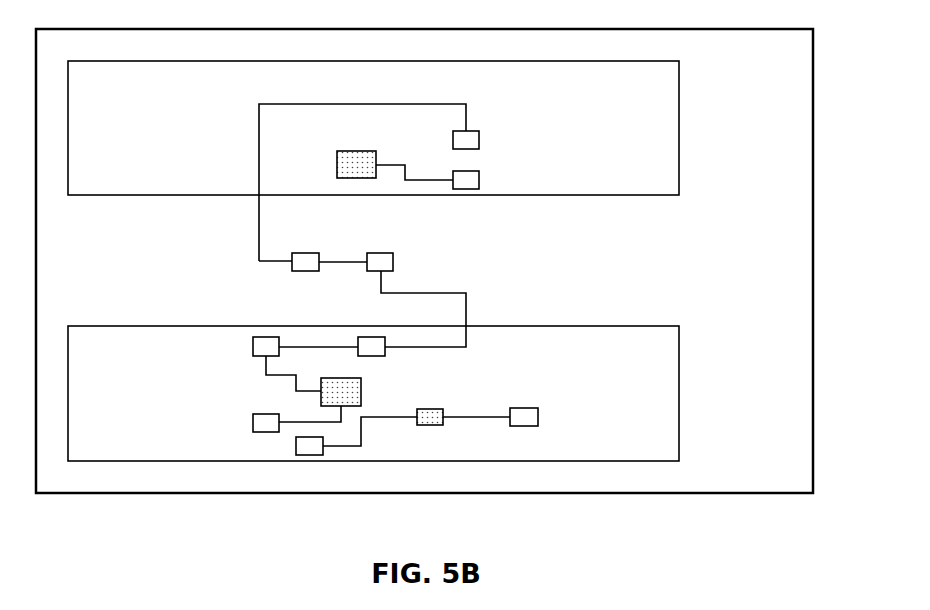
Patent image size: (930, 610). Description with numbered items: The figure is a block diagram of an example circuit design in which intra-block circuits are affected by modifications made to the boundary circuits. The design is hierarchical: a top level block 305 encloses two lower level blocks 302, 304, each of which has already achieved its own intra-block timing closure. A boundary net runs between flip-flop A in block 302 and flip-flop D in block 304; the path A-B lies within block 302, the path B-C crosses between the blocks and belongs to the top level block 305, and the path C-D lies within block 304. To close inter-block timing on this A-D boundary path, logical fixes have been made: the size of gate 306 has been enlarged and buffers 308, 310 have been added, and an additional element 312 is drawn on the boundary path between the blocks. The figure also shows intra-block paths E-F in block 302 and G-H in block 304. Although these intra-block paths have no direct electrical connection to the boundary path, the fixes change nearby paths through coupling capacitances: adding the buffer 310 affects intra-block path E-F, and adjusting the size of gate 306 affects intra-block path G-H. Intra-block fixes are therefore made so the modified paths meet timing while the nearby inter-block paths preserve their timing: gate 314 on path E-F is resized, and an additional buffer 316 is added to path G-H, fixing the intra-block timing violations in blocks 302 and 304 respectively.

The block 302 is at (679, 128).
The block 304 is at (679, 393).
The top level block 305 is at (622, 495).
The gate 306 is at (361, 390).
The buffer 308 is at (385, 352).
The buffer 310 is at (305, 271).
The terminal 312 is at (393, 258).
The gate 314 is at (357, 177).
The buffer 316 is at (428, 425).
The flip-flop A is at (479, 138).
The boundary node B is at (259, 182).
The boundary node C is at (466, 305).
The flip-flop D is at (253, 420).
The intra-block path endpoint E is at (356, 152).
The intra-block path endpoint F is at (479, 180).
The intra-block path endpoint G is at (307, 455).
The intra-block path endpoint H is at (538, 415).